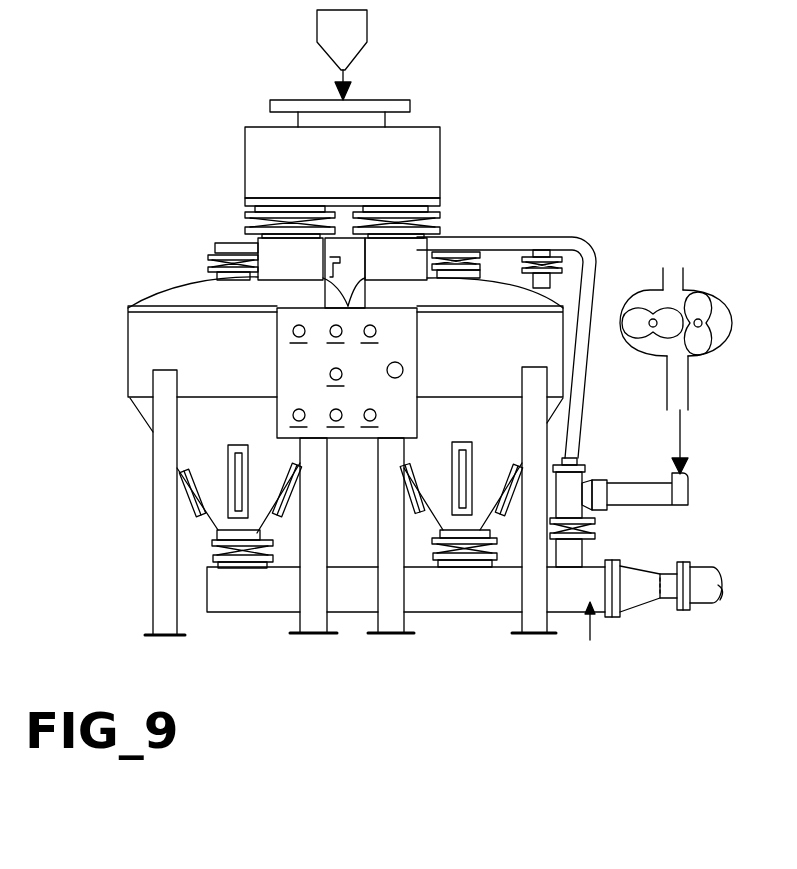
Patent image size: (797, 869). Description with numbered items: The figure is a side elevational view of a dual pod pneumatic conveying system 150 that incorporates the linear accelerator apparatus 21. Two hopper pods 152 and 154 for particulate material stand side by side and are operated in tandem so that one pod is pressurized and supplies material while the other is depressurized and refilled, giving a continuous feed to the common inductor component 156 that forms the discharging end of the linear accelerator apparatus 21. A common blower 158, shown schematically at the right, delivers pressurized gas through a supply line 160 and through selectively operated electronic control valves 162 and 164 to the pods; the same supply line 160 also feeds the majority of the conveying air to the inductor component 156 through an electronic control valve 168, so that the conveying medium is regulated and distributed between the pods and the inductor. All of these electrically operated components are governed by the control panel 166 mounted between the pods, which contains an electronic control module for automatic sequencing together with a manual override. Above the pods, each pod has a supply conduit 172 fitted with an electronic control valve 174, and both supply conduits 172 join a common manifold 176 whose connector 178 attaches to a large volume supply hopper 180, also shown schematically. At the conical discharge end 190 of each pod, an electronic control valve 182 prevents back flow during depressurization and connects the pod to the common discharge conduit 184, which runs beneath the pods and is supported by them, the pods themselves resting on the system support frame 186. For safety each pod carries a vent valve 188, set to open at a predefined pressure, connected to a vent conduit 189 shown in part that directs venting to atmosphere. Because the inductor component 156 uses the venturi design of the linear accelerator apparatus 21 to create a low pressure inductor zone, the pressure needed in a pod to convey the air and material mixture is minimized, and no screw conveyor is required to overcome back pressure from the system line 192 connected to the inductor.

The dual pod pneumatic conveying system 150 is at (640, 210).
The hopper pod 152 is at (482, 378).
The hopper pod 154 is at (242, 378).
The inductor component 156 is at (664, 603).
The common blower 158 is at (747, 277).
The supply line 160 is at (680, 437).
The electronic control valve 162 is at (540, 247).
The electronic control valve 164 is at (333, 270).
The control panel 166 is at (408, 415).
The electronic control valve 168 is at (597, 530).
The supply conduit 172 is at (260, 248).
The electronic control valve 174 is at (440, 220).
The common manifold 176 is at (246, 165).
The connector 178 is at (409, 101).
The supply hopper 180 is at (368, 40).
The electronic control valve 182 is at (215, 550).
The common discharge conduit 184 is at (412, 622).
The system support frame 186 is at (160, 478).
The vent valve 188 is at (215, 262).
The vent conduit 189 is at (215, 248).
The conical discharge end 190 is at (213, 525).
The system line 192 is at (705, 600).
The linear accelerator apparatus 21 is at (601, 634).